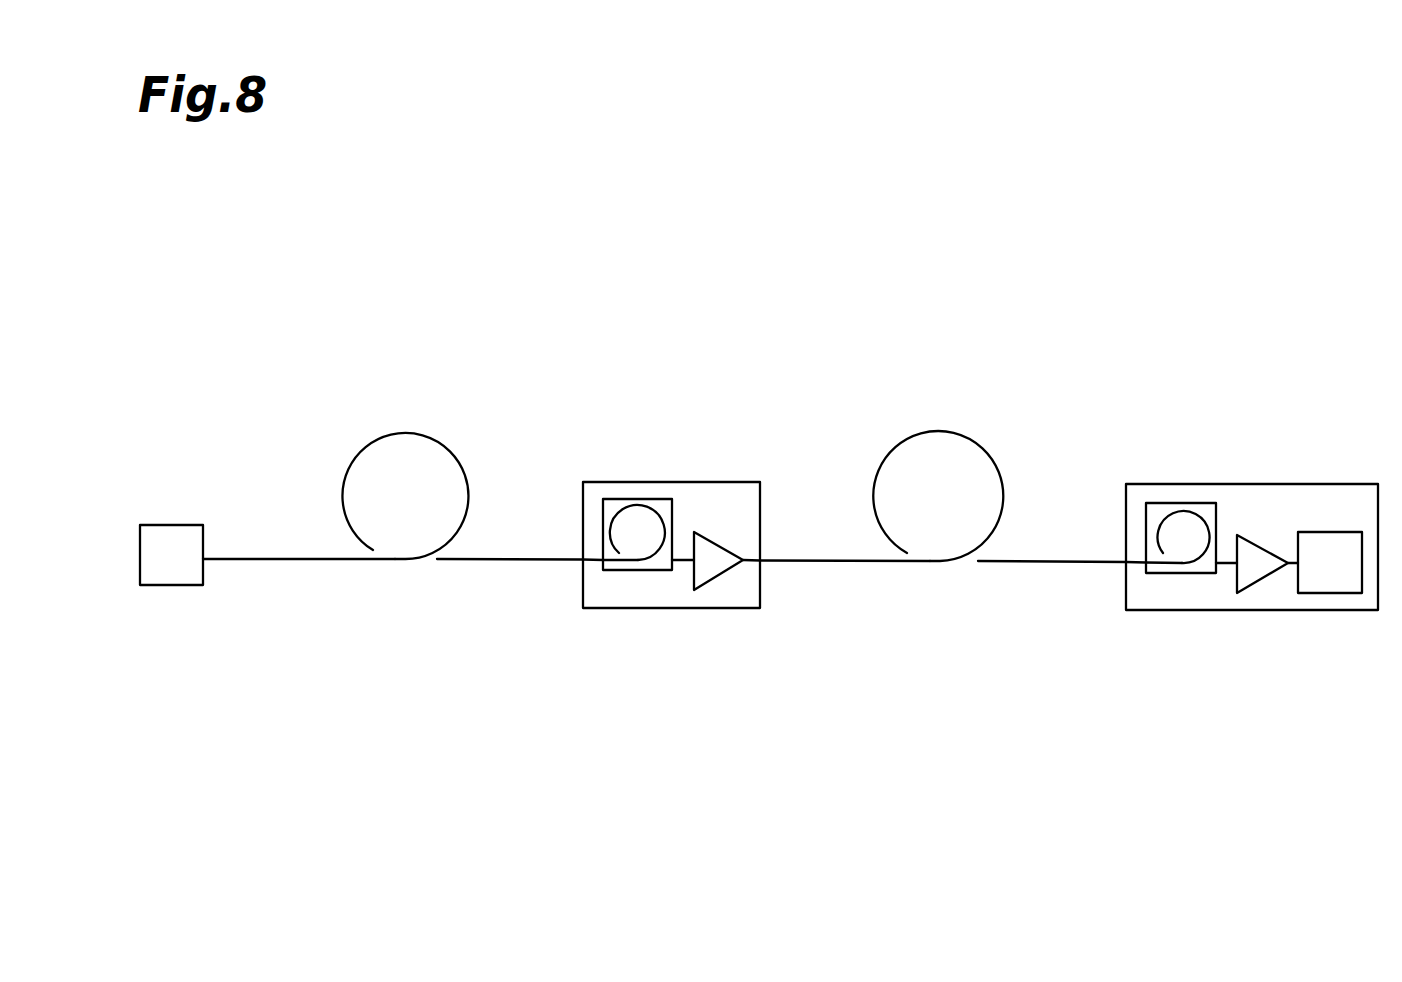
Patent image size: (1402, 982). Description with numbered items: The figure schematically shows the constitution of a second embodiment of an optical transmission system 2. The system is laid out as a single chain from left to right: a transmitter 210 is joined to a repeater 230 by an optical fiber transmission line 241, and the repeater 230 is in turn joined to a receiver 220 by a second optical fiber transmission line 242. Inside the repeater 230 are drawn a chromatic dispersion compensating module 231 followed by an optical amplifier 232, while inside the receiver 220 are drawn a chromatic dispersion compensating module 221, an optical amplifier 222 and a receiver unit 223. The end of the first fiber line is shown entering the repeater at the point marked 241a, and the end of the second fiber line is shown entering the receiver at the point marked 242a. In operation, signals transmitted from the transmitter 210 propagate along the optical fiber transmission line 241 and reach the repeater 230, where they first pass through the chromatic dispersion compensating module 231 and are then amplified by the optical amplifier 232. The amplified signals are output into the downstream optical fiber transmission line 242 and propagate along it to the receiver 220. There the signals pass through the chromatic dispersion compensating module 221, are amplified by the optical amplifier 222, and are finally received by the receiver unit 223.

The optical transmission system 2 is at (840, 337).
The transmitter 210 is at (175, 587).
The receiver 220 is at (1250, 612).
The chromatic dispersion compensating module 221 is at (1175, 503).
The optical amplifier 222 is at (1262, 547).
The receiver unit 223 is at (1335, 532).
The repeater 230 is at (707, 610).
The chromatic dispersion compensating module 231 is at (633, 499).
The optical amplifier 232 is at (720, 545).
The optical fiber transmission line 241 is at (423, 433).
The end of optical fiber transmission line 241a is at (603, 562).
The optical fiber transmission line 242 is at (945, 437).
The end of optical fiber transmission line 242a is at (1147, 563).